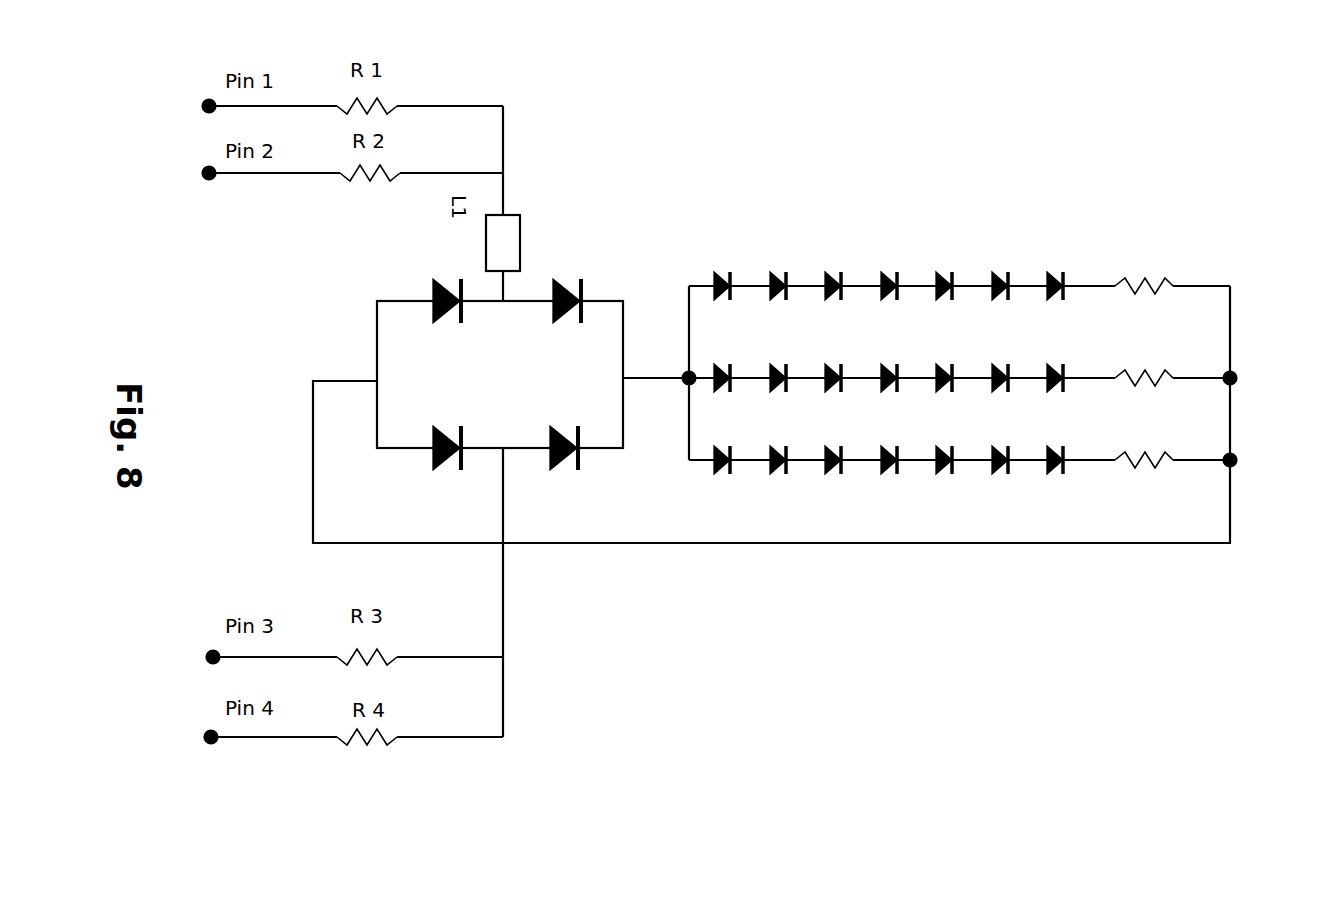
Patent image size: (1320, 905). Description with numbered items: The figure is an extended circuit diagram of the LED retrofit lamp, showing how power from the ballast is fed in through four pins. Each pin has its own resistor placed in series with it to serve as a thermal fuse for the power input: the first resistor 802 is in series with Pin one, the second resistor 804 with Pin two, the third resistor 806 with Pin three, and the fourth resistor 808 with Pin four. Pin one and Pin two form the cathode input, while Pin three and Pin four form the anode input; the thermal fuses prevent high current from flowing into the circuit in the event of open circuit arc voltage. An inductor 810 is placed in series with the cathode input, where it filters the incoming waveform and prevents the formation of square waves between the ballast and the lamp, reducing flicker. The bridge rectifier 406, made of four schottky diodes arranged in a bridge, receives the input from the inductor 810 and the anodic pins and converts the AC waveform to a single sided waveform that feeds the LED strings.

The resistor R1 802 is at (392, 98).
The resistor R2 804 is at (372, 177).
The resistor R3 806 is at (393, 652).
The resistor R4 808 is at (372, 747).
The inductor L1 810 is at (572, 215).
The bridge rectifier 406 is at (376, 325).